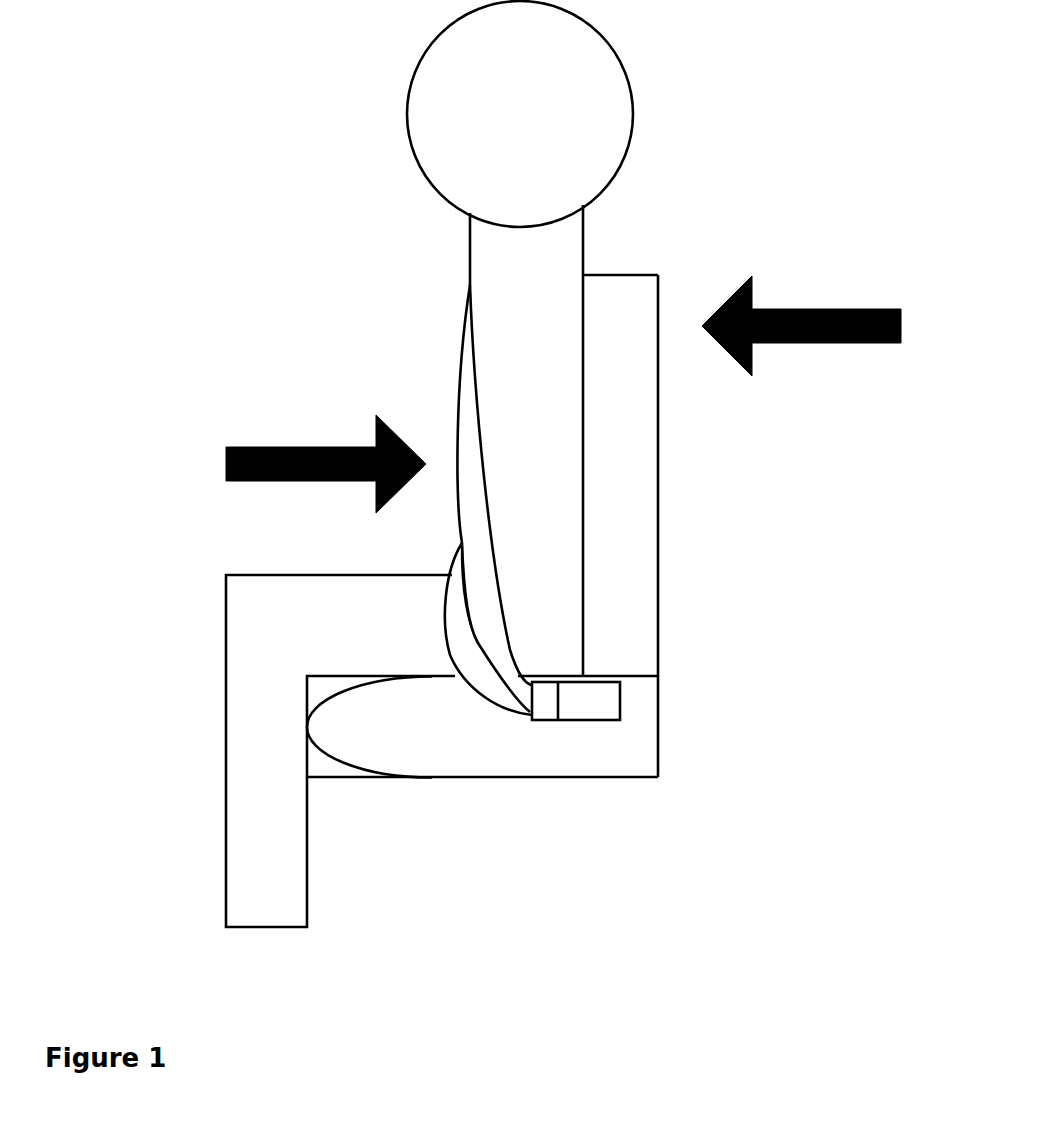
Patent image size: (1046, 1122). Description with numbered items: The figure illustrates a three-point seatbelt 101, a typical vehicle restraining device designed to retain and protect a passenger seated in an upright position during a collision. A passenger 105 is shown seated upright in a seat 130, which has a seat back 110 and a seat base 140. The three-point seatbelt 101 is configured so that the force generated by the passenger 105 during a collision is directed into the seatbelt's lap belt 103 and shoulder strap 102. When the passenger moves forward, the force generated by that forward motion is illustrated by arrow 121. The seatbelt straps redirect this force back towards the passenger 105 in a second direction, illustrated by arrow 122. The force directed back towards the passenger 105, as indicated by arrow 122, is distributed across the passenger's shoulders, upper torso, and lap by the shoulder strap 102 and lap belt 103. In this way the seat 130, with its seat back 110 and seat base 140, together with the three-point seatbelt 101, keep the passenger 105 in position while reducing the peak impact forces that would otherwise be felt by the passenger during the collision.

The three-point seatbelt 101 is at (598, 707).
The shoulder strap 102 is at (478, 612).
The lap belt 103 is at (468, 650).
The passenger 105 is at (553, 471).
The seat back 110 is at (655, 430).
The arrow 121 is at (753, 308).
The arrow 122 is at (380, 447).
The seat 130 is at (598, 763).
The seat base 140 is at (457, 777).